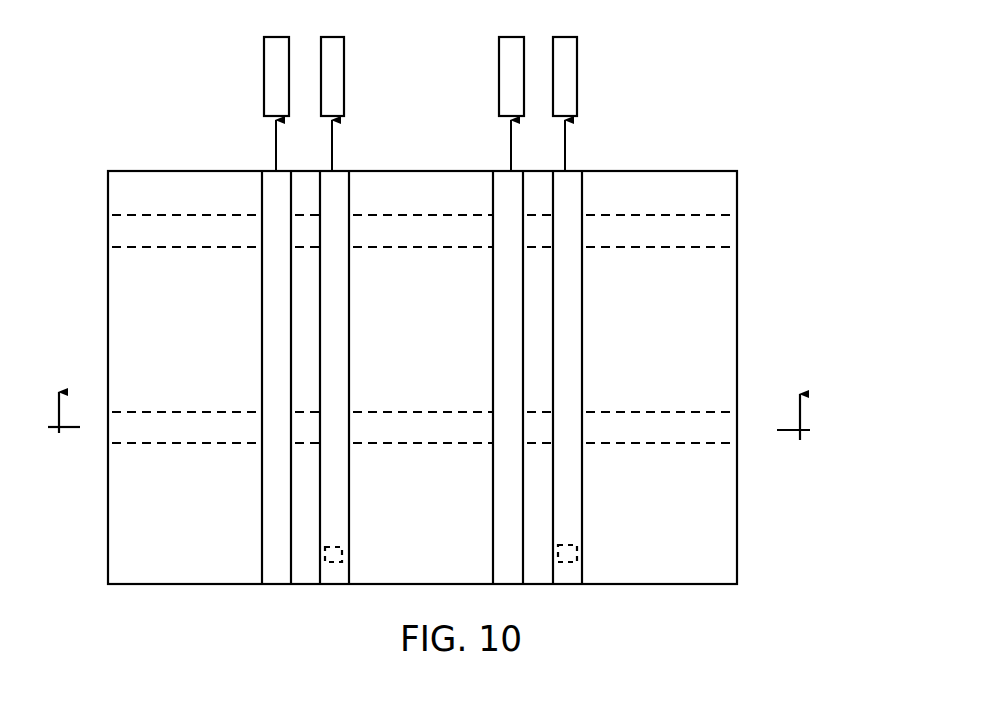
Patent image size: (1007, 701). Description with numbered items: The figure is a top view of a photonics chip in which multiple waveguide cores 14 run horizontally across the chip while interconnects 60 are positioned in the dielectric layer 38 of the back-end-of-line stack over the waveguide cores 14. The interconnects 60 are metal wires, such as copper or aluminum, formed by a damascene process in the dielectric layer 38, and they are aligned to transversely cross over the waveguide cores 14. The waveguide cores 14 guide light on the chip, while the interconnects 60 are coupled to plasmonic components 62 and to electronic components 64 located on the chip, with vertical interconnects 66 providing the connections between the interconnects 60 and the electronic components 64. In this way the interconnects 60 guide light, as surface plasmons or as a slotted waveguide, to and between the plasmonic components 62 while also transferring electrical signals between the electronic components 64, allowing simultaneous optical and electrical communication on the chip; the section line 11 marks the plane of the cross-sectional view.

The section line 11- 11 is at (425, 399).
The waveguide core 14 is at (172, 235).
The dielectric layer 38 is at (673, 276).
The interconnect 60 is at (510, 313).
The plasmonic component 62 is at (275, 86).
The electronic component 64 is at (335, 62).
The vertical interconnect 66 is at (342, 556).